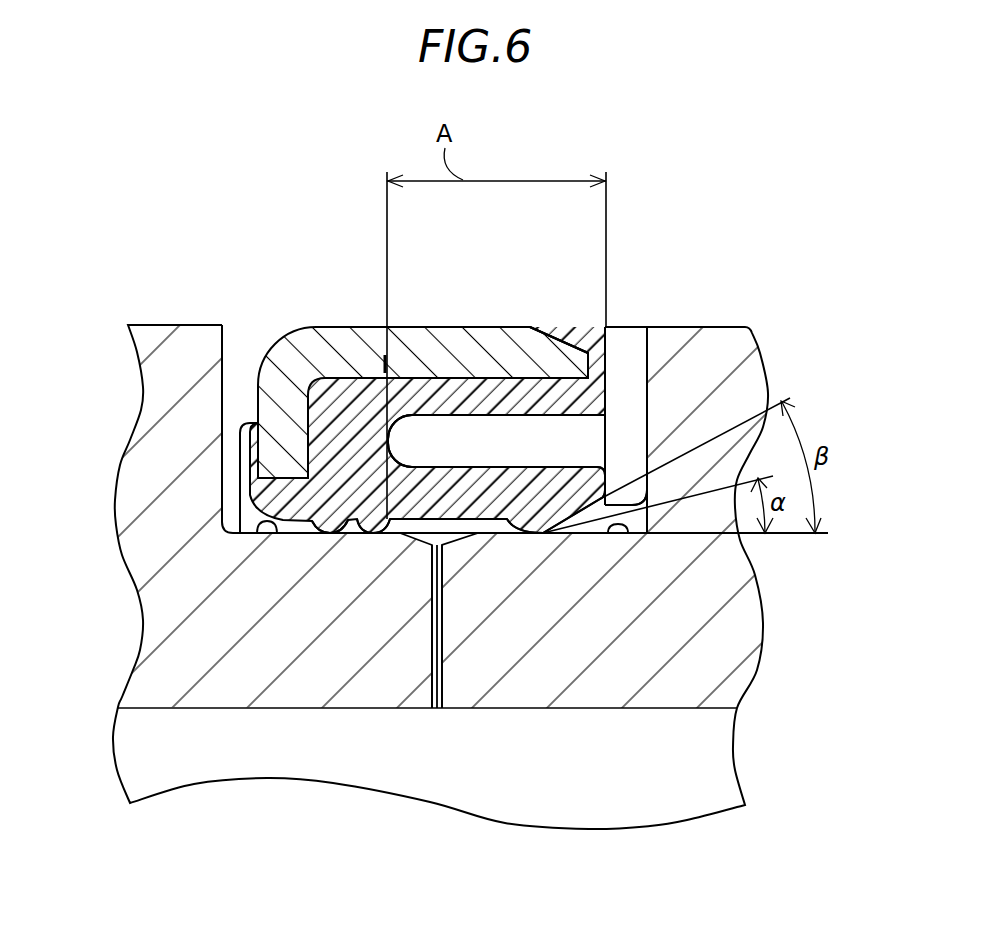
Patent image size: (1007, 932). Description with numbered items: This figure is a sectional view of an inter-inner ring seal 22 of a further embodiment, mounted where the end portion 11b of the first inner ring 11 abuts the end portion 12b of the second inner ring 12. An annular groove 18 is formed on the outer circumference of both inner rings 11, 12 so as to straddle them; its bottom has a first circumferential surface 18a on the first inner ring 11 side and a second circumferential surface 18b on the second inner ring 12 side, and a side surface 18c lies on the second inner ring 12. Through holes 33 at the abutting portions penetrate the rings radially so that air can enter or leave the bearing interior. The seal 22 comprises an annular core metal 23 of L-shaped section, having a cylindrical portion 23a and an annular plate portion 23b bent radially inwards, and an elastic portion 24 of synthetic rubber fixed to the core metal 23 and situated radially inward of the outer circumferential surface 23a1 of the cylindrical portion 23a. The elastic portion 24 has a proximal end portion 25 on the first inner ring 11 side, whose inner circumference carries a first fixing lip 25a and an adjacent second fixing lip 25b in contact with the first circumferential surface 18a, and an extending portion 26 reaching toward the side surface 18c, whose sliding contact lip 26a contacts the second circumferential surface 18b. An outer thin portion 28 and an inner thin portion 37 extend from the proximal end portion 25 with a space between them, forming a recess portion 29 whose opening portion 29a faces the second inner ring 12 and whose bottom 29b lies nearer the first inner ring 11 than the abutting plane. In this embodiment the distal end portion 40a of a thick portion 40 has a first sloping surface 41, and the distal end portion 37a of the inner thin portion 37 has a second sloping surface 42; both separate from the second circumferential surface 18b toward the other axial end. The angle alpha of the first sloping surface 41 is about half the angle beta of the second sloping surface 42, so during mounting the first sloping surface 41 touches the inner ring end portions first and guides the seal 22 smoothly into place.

The first inner ring 11 is at (137, 592).
The end portion of the first inner ring 11b is at (443, 683).
The second inner ring 12 is at (768, 601).
The end portion of the second inner ring 12b is at (435, 653).
The annular groove 18 is at (227, 348).
The first circumferential surface 18a is at (263, 533).
The second circumferential surface 18b is at (620, 505).
The side surface of the annular groove 18c is at (613, 392).
The inter-inner ring seal 22 is at (503, 434).
The core metal 23 is at (448, 325).
The cylindrical portion 23a is at (480, 335).
The outer circumferential surface of the cylindrical portion 23a1 is at (385, 370).
The annular plate portion 23b is at (258, 407).
The elastic portion 24 is at (417, 376).
The proximal end portion 25 is at (352, 418).
The first fixing lip 25a is at (305, 527).
The second fixing lip 25b is at (360, 530).
The extending portion 26 is at (648, 370).
The sliding contact lip 26a is at (538, 533).
The outer thin portion 28 is at (547, 403).
The recess portion 29 is at (543, 447).
The opening portion 29a is at (612, 433).
The bottom of the recess portion 29b is at (400, 440).
The through hole 33 is at (430, 717).
The inner thin portion 37 is at (508, 492).
The distal end portion of the inner thin portion 37a is at (587, 500).
The thick portion 40 is at (628, 347).
The distal end portion of the thick portion 40a is at (653, 505).
The first sloping surface 41 is at (633, 513).
The second sloping surface 42 is at (572, 493).